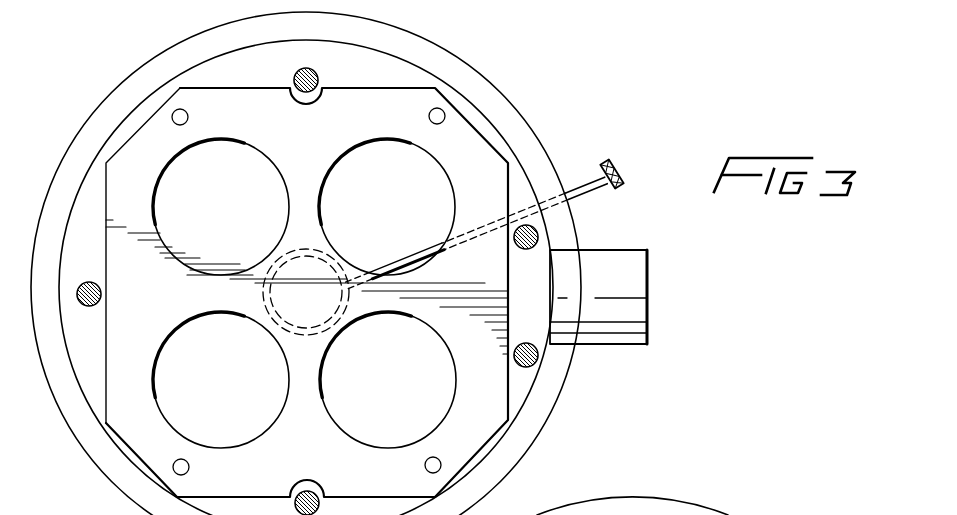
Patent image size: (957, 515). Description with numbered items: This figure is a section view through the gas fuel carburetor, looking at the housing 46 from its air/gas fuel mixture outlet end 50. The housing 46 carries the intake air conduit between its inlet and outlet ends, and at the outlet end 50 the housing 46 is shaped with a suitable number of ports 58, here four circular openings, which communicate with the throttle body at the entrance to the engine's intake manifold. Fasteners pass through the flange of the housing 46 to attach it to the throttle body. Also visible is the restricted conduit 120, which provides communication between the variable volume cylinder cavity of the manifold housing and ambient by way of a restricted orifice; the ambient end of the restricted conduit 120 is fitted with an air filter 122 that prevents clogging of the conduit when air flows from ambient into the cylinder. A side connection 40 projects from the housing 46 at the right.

The outlet conduit 40 is at (648, 278).
The housing 46 is at (563, 400).
The air/gas fuel mixture outlet end 50 is at (406, 74).
The ports 58 is at (437, 158).
The restricted conduit 120 is at (590, 187).
The air filter 122 is at (616, 160).